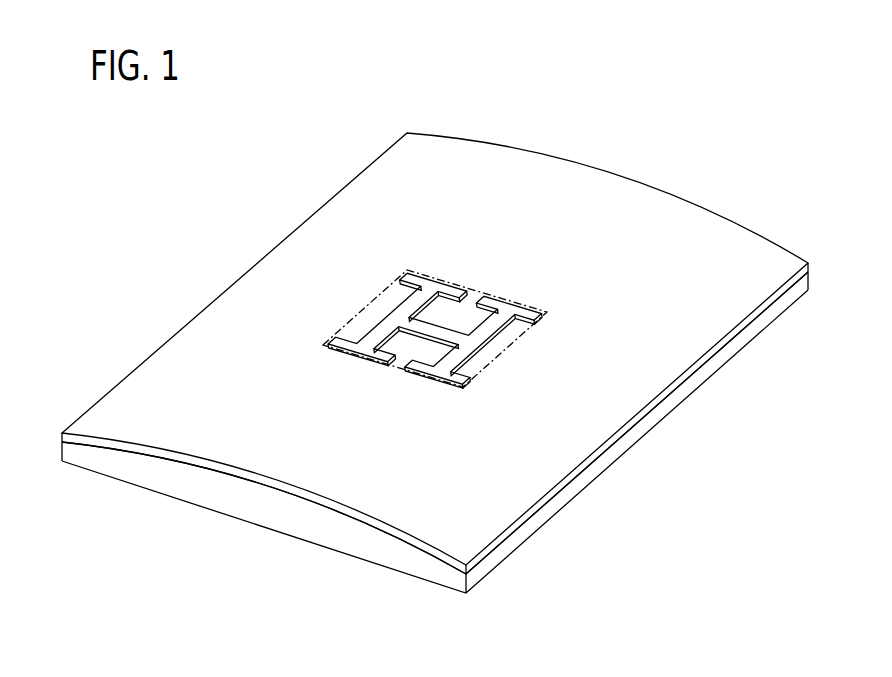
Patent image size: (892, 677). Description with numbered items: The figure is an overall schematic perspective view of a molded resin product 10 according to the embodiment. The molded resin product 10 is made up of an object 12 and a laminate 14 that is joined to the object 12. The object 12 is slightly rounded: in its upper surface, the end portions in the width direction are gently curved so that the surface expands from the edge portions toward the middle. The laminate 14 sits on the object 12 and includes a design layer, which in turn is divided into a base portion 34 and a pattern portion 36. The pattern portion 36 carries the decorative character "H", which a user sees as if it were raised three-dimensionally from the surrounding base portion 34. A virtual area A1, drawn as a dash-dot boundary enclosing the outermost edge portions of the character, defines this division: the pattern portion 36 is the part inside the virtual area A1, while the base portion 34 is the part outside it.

The molded resin product 10 is at (705, 98).
The object 12 is at (622, 457).
The laminate 14 is at (573, 187).
The base portion 34 is at (312, 267).
The pattern portion 36 is at (428, 288).
The virtual area A1 is at (411, 267).